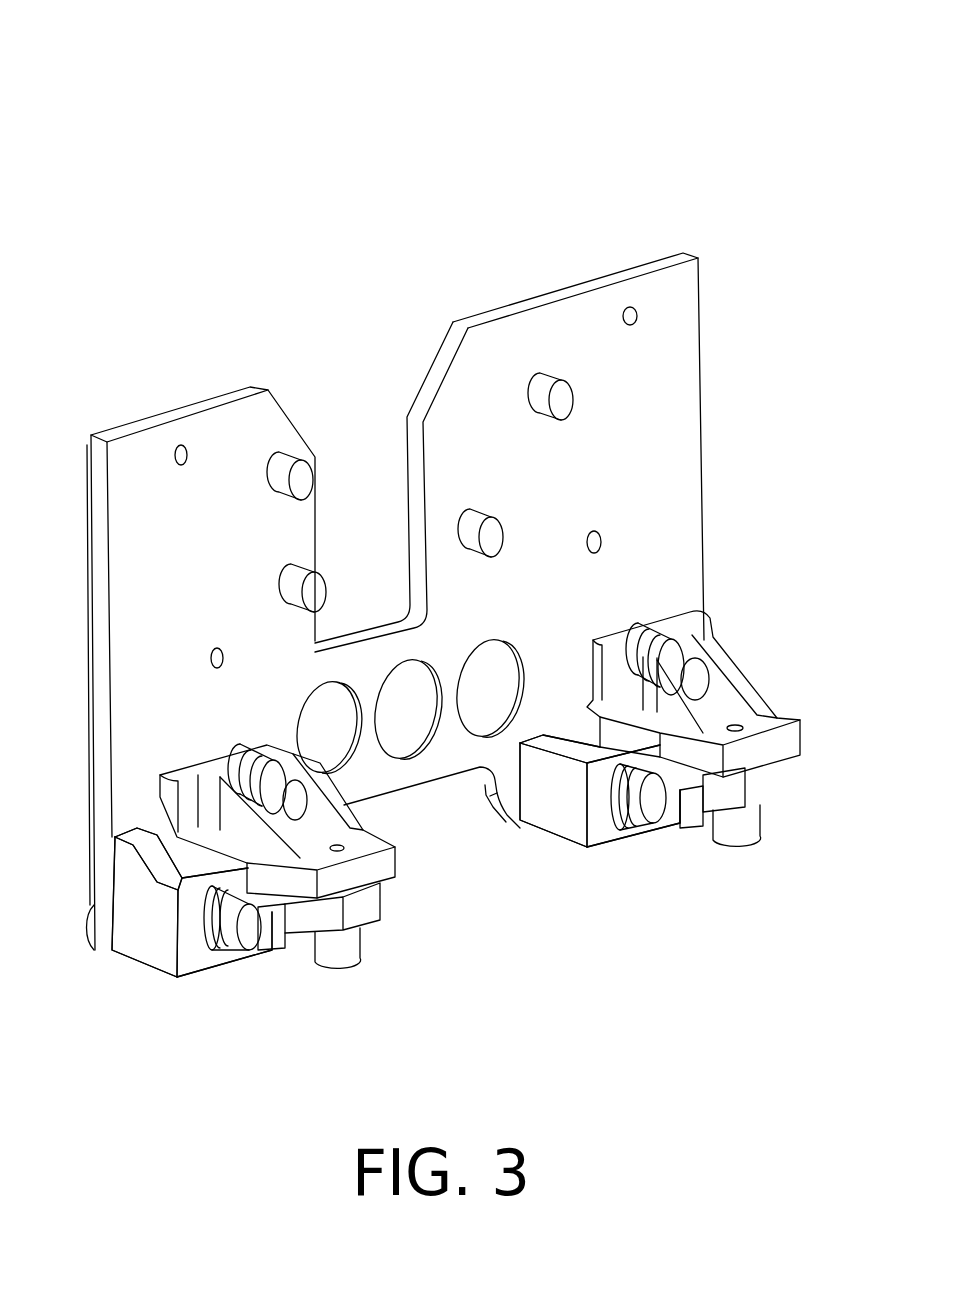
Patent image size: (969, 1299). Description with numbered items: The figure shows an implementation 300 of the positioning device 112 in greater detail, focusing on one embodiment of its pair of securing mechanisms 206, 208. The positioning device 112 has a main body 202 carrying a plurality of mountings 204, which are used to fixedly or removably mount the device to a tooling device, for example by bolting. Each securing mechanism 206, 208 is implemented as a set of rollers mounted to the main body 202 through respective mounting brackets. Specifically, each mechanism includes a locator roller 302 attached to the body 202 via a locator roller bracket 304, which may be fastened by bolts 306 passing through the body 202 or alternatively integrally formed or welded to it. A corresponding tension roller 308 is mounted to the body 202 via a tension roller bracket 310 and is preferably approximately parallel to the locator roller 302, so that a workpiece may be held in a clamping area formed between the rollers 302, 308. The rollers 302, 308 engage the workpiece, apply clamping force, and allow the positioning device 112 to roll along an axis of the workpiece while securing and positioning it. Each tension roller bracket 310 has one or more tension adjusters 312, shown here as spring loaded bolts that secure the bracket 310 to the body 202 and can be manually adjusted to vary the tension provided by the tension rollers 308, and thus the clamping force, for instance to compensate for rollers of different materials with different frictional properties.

The implementation 300 is at (688, 73).
The positioning device 112 is at (227, 297).
The main body 202 is at (680, 350).
The mountings 204 is at (533, 363).
The securing mechanism 206 is at (247, 1043).
The securing mechanism 208 is at (707, 922).
The locator roller 302 is at (297, 953).
The locator roller bracket 304 is at (132, 945).
The bolt 306 is at (92, 928).
The tension roller 308 is at (345, 950).
The tension roller bracket 310 is at (363, 882).
The tension adjuster 312 is at (302, 797).